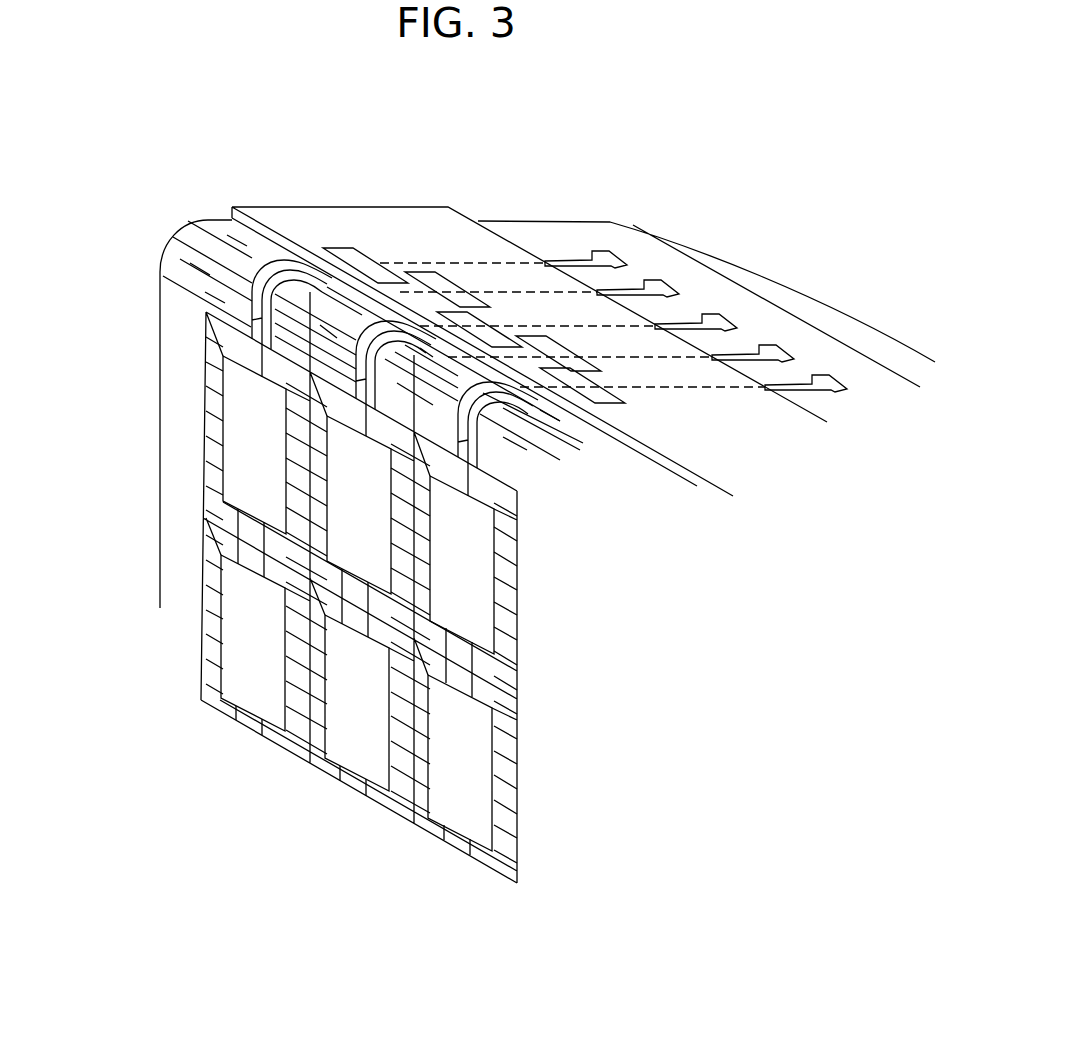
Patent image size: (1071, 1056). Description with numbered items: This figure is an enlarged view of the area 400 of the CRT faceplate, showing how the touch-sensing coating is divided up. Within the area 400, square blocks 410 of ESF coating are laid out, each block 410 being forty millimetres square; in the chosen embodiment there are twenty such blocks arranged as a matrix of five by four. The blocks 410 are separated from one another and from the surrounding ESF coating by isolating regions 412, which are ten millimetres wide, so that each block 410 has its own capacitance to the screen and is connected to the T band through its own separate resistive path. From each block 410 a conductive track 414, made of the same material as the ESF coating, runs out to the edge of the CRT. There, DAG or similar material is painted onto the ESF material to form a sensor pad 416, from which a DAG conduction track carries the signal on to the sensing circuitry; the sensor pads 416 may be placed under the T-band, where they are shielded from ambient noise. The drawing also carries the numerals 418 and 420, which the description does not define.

The area of the faceplate 400 is at (712, 123).
The block of ESF coating 410 is at (243, 437).
The isolating region 412 is at (200, 608).
The conductive track 414 is at (250, 290).
The sensor pad 416 is at (370, 262).
The connector tab 418 is at (715, 387).
The interconnect plate 420 is at (300, 207).